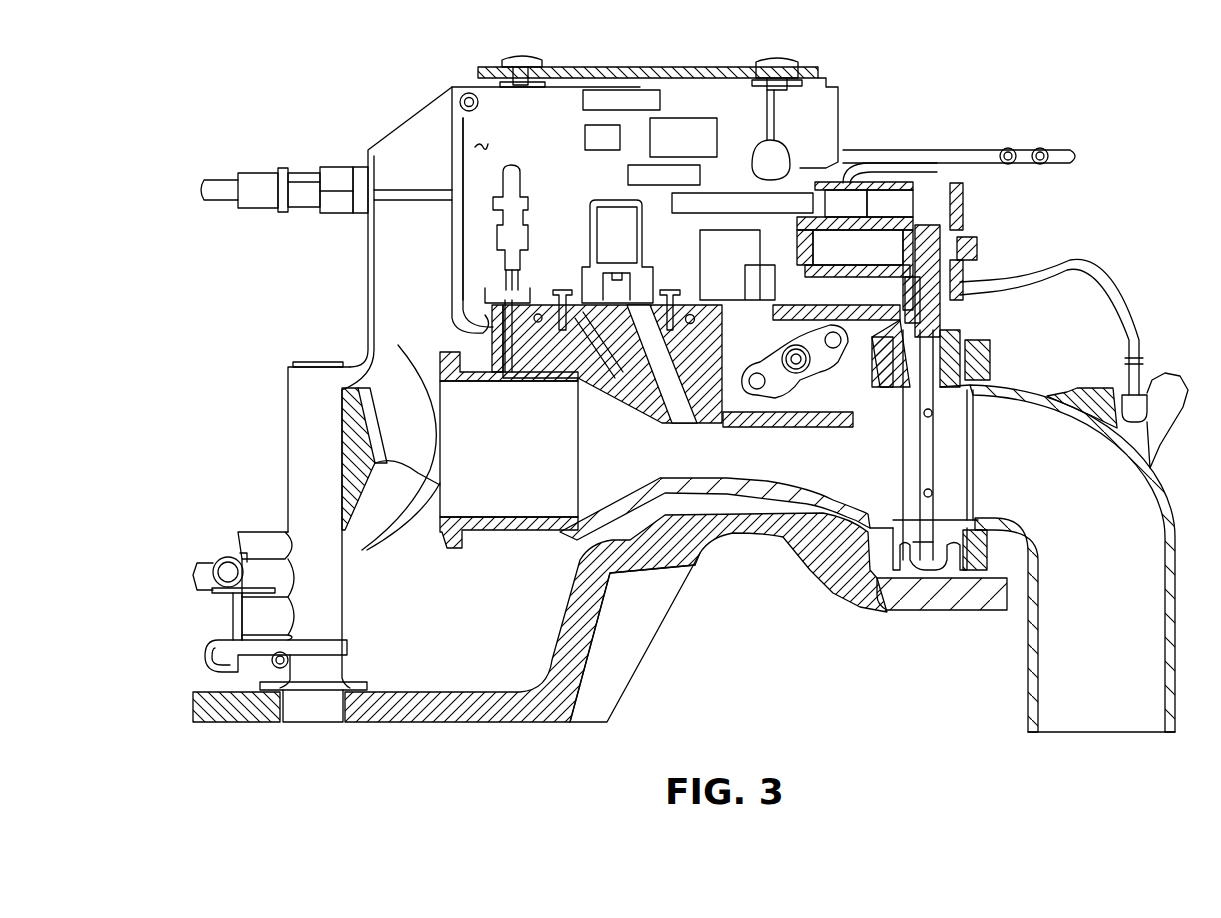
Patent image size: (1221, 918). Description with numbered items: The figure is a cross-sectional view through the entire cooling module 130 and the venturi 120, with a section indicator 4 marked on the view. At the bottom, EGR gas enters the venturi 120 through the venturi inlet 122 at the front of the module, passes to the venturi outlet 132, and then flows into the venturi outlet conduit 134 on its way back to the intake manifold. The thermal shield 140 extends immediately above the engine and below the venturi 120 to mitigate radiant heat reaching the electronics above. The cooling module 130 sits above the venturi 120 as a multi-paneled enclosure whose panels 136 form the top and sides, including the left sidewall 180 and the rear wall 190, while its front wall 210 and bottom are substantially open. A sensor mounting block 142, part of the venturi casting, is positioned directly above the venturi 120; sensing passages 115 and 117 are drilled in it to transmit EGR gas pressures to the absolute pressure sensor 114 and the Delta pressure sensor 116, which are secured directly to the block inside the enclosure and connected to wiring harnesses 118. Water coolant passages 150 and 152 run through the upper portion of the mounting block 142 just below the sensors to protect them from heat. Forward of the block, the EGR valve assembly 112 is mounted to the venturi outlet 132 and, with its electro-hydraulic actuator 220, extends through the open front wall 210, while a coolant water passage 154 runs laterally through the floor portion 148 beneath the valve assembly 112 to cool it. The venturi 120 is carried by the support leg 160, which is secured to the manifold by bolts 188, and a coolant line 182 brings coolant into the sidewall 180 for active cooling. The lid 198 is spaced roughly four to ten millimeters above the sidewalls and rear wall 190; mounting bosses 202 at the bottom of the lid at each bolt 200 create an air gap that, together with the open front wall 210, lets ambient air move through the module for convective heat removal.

The section line 4 is at (545, 84).
The EGR valve assembly 112 is at (965, 360).
The absolute pressure sensor 114 is at (500, 225).
The sensing passage 115 is at (502, 350).
The Delta pressure sensor 116 is at (538, 123).
The sensing passage 117 is at (615, 393).
The wiring harnesses 118 is at (607, 135).
The venturi 120 is at (787, 467).
The venturi inlet 122 is at (375, 400).
The cooling module 130 is at (407, 96).
The venturi outlet 132 is at (868, 492).
The venturi outlet conduit 134 is at (1083, 588).
The panels 136 is at (473, 150).
The thermal shield 140 is at (633, 645).
The sensor mounting block 142 is at (670, 398).
The floor portion 148 is at (832, 357).
The water coolant passage 150 is at (538, 312).
The water coolant passage 152 is at (694, 321).
The coolant water passage 154 is at (792, 356).
The left cooling module support leg 160 is at (305, 463).
The left sidewall 180 is at (500, 196).
The coolant line 182 is at (218, 195).
The bolts 188 is at (333, 362).
The rear wall 190 is at (470, 248).
The lid 198 is at (738, 68).
The bolt 200 is at (500, 62).
The mounting bosses 202 is at (525, 183).
The open front wall 210 is at (905, 108).
The electro-hydraulic actuator 220 is at (843, 284).